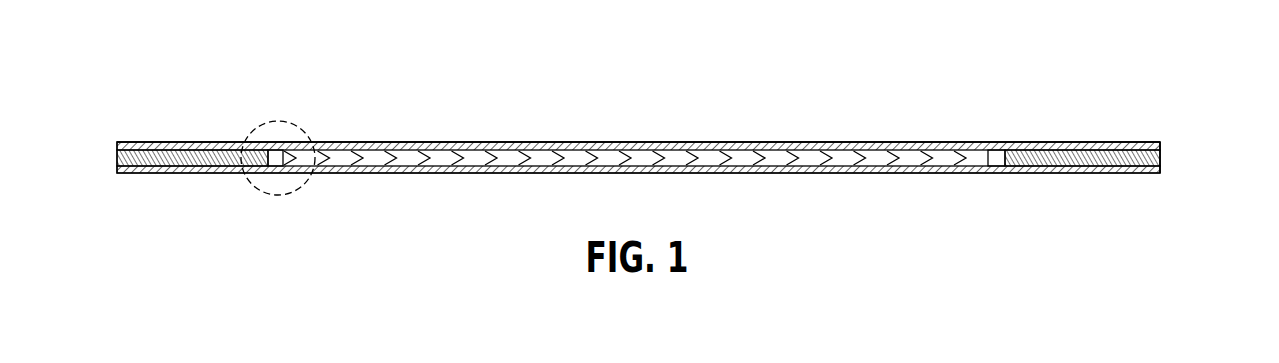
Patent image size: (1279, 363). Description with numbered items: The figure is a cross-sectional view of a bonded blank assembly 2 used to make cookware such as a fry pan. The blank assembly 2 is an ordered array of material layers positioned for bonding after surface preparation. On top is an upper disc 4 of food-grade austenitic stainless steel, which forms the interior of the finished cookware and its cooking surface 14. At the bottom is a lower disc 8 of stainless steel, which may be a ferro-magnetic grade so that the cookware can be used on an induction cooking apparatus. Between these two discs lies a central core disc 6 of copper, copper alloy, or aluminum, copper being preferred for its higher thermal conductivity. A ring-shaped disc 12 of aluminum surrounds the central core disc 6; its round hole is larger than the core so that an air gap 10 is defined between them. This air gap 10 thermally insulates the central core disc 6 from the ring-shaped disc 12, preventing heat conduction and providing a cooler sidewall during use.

The blank assembly 2 is at (1125, 105).
The upper disc 4 is at (850, 142).
The central core disc 6 is at (939, 158).
The lower disc 8 is at (833, 172).
The air gap 10 is at (280, 156).
The ring-shaped disc 12 is at (1160, 162).
The cooking surface 14 is at (629, 142).